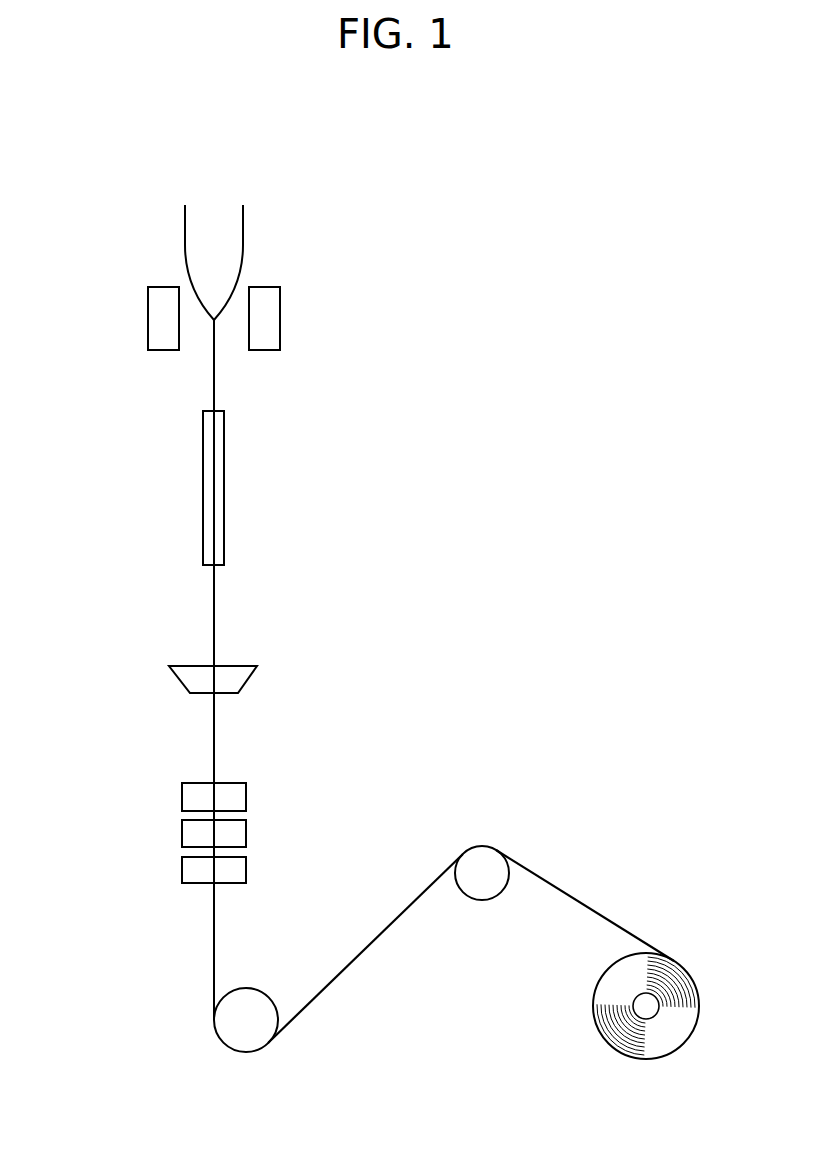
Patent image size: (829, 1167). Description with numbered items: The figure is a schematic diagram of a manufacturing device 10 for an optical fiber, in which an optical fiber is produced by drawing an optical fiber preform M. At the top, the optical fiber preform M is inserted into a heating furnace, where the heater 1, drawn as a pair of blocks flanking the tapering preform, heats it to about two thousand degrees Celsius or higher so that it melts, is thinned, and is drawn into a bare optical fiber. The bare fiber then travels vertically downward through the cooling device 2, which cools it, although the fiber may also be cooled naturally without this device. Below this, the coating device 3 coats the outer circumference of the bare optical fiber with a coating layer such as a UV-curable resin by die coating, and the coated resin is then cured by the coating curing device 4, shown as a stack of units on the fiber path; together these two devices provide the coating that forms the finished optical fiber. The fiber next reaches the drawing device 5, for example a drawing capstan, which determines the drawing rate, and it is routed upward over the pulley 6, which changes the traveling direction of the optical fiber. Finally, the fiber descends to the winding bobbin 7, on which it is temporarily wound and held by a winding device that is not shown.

The manufacturing device 10 is at (110, 210).
The optical fiber preform M is at (243, 220).
The heater 1 is at (280, 302).
The cooling device 2 is at (224, 477).
The coating device 3 is at (247, 682).
The coating curing device 4 is at (264, 789).
The drawing device 5 is at (228, 1040).
The pulley 6 is at (484, 847).
The winding bobbin 7 is at (677, 1043).